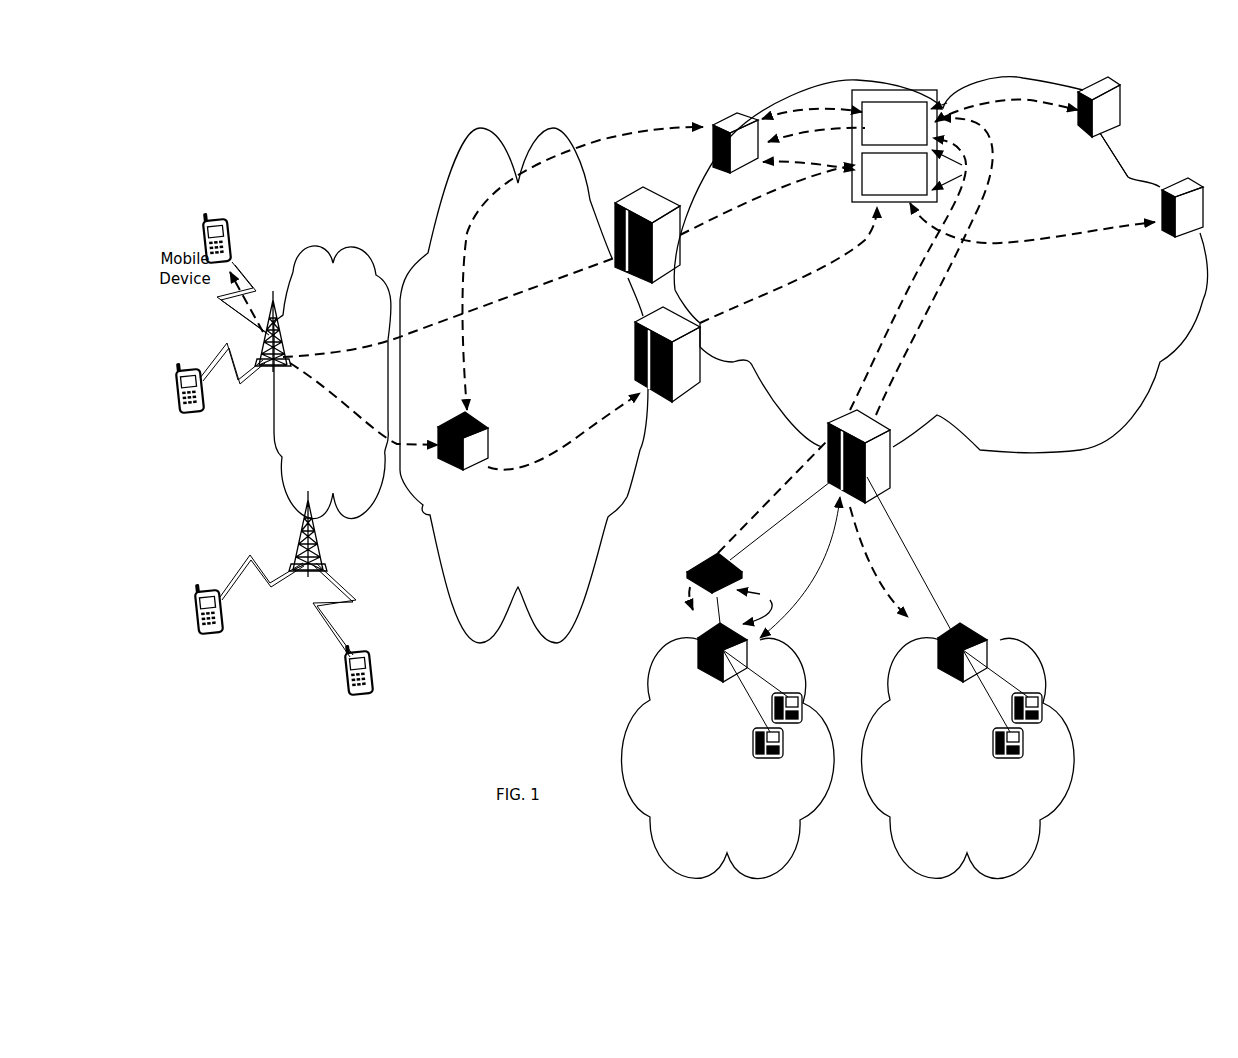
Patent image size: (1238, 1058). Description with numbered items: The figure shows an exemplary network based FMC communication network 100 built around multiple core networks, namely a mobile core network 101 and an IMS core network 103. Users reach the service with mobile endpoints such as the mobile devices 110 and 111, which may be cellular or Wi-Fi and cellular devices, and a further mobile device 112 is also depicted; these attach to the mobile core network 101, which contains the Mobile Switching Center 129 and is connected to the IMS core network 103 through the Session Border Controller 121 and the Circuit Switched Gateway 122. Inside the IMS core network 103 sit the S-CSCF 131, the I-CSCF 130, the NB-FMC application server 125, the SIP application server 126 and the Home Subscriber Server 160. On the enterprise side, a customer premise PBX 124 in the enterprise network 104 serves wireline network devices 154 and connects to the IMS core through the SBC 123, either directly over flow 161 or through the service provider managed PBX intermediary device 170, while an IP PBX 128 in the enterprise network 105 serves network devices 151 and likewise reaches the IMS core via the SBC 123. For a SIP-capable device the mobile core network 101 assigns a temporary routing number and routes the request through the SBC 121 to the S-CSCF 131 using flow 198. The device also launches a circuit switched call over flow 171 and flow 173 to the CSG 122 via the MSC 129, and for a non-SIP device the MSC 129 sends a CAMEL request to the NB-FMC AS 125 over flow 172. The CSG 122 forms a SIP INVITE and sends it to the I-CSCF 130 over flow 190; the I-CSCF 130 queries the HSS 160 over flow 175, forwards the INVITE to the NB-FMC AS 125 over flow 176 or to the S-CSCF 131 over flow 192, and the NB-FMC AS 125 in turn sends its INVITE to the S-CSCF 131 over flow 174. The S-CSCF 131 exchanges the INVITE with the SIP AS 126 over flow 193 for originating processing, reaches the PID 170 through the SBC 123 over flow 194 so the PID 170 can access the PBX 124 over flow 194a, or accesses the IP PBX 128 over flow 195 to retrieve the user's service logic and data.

The network based FMC communication network 100 is at (357, 129).
The mobile core network 101 is at (507, 386).
The IMS core network 103 is at (1195, 298).
The enterprise network 104 is at (712, 791).
The enterprise network 105 is at (319, 426).
The mobile device 110 is at (186, 416).
The mobile device 111 is at (216, 639).
The mobile device 112 is at (367, 700).
The Session Border Controller 121 is at (647, 213).
The Circuit Switched Gateway 122 is at (670, 379).
The Session Border Controller 123 is at (880, 456).
The customer premise PBX 124 is at (728, 677).
The NB-FMC application server 125 is at (730, 121).
The SIP application server 126 is at (1103, 87).
The IP PBX 128 is at (963, 677).
The Mobile Switching Center 129 is at (463, 460).
The I-CSCF 130 is at (894, 174).
The S-CSCF 131 is at (894, 123).
The network devices 151 is at (1010, 725).
The network devices 154 is at (770, 725).
The Home Subscriber Server 160 is at (1182, 187).
The flow 161 is at (800, 567).
The PBX intermediary device 170 is at (697, 564).
The flow 171 is at (364, 404).
The flow 172 is at (564, 268).
The flow 173 is at (564, 436).
The flow 174 is at (813, 117).
The flow 175 is at (1032, 232).
The flow 176 is at (809, 159).
The flow 190 is at (788, 265).
The flow 192 is at (949, 170).
The flow 193 is at (1006, 104).
The flow 194 is at (842, 345).
The flow 194a is at (766, 603).
The flow 195 is at (934, 266).
The flow 198 is at (569, 261).